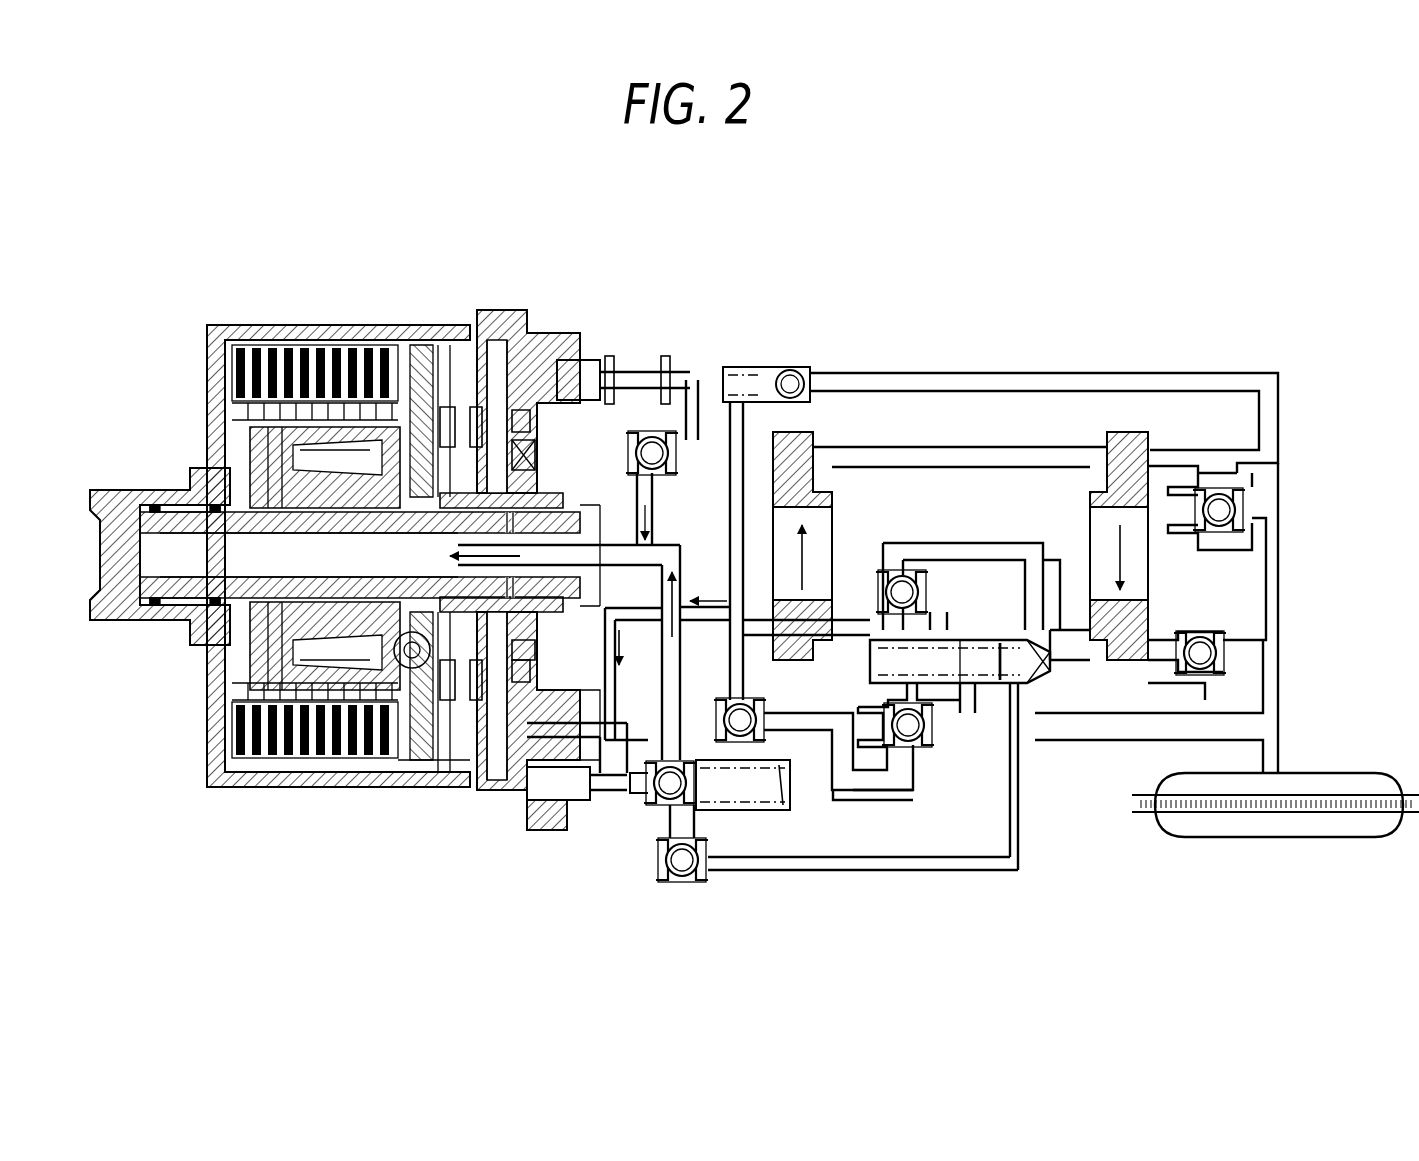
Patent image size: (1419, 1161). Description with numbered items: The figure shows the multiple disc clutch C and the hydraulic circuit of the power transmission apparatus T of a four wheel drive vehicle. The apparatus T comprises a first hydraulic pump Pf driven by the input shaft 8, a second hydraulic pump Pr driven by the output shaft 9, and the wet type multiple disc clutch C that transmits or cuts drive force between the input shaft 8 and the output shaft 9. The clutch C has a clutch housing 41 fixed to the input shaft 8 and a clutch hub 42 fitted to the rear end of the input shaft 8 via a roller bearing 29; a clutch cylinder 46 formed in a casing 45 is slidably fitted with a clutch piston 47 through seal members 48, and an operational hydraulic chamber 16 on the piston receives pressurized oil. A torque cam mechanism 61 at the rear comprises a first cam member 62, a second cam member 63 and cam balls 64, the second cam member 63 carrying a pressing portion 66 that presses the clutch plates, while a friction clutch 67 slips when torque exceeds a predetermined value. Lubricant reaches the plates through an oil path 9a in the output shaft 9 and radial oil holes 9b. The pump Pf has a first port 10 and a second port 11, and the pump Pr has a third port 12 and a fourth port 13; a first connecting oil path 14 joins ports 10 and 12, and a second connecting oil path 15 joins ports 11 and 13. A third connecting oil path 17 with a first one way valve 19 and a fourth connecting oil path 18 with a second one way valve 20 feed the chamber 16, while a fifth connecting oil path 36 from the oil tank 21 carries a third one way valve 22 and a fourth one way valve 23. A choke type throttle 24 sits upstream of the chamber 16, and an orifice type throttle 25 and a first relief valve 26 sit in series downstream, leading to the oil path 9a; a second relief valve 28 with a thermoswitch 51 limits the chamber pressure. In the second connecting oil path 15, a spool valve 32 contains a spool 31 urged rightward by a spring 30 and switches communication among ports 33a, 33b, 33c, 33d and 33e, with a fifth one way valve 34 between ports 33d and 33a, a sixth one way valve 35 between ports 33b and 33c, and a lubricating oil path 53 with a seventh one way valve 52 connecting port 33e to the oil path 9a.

The multiple disc clutch C is at (290, 315).
The power transmission apparatus T is at (890, 335).
The input shaft 8 is at (100, 615).
The output shaft 9 is at (410, 539).
The oil path 9a is at (432, 548).
The oil holes 9b is at (309, 555).
The first port 10 is at (815, 455).
The second port 11 is at (830, 640).
The third port 12 is at (1105, 455).
The fourth port 13 is at (1090, 648).
The first connecting oil path 14 is at (990, 460).
The second connecting oil path 15 is at (865, 795).
The operational hydraulic chamber 16 is at (520, 672).
The third connecting oil path 17 is at (972, 372).
The fourth connecting oil path 18 is at (812, 770).
The first one way valve 19 is at (792, 370).
The second one way valve 20 is at (718, 705).
The oil tank 21 is at (1335, 775).
The third one way valve 22 is at (1240, 500).
The fourth one way valve 23 is at (1196, 635).
The choke type throttle 24 is at (545, 725).
The orifice type throttle 25 is at (630, 362).
The first relief valve 26 is at (662, 480).
The second relief valve 28 is at (660, 802).
The roller bearing 29 is at (172, 500).
The spring 30 is at (960, 622).
The spool 31 is at (1003, 640).
The spool valve 32 is at (968, 630).
The port 33a is at (858, 700).
The port 33b is at (960, 560).
The port 33c is at (1048, 605).
The port 33d is at (967, 712).
The port 33e is at (1025, 700).
The fifth one way valve 34 is at (917, 750).
The sixth one way valve 35 is at (903, 570).
The fifth connecting oil path 36 is at (1282, 615).
The clutch housing 41 is at (258, 322).
The clutch hub 42 is at (262, 480).
The casing 45 is at (528, 312).
The clutch cylinder 46 is at (478, 345).
The clutch piston 47 is at (500, 438).
The seal members 48 is at (500, 465).
The thermoswitch 51 is at (545, 832).
The seventh one way valve 52 is at (690, 880).
The lubricating oil path 53 is at (875, 872).
The torque cam mechanism 61 is at (452, 780).
The first cam member 62 is at (466, 780).
The second cam member 63 is at (380, 570).
The cam balls 64 is at (430, 640).
The pressing portion 66 is at (395, 350).
The friction clutch 67 is at (410, 780).
The first hydraulic pump Pf is at (842, 545).
The second hydraulic pump Pr is at (1155, 568).